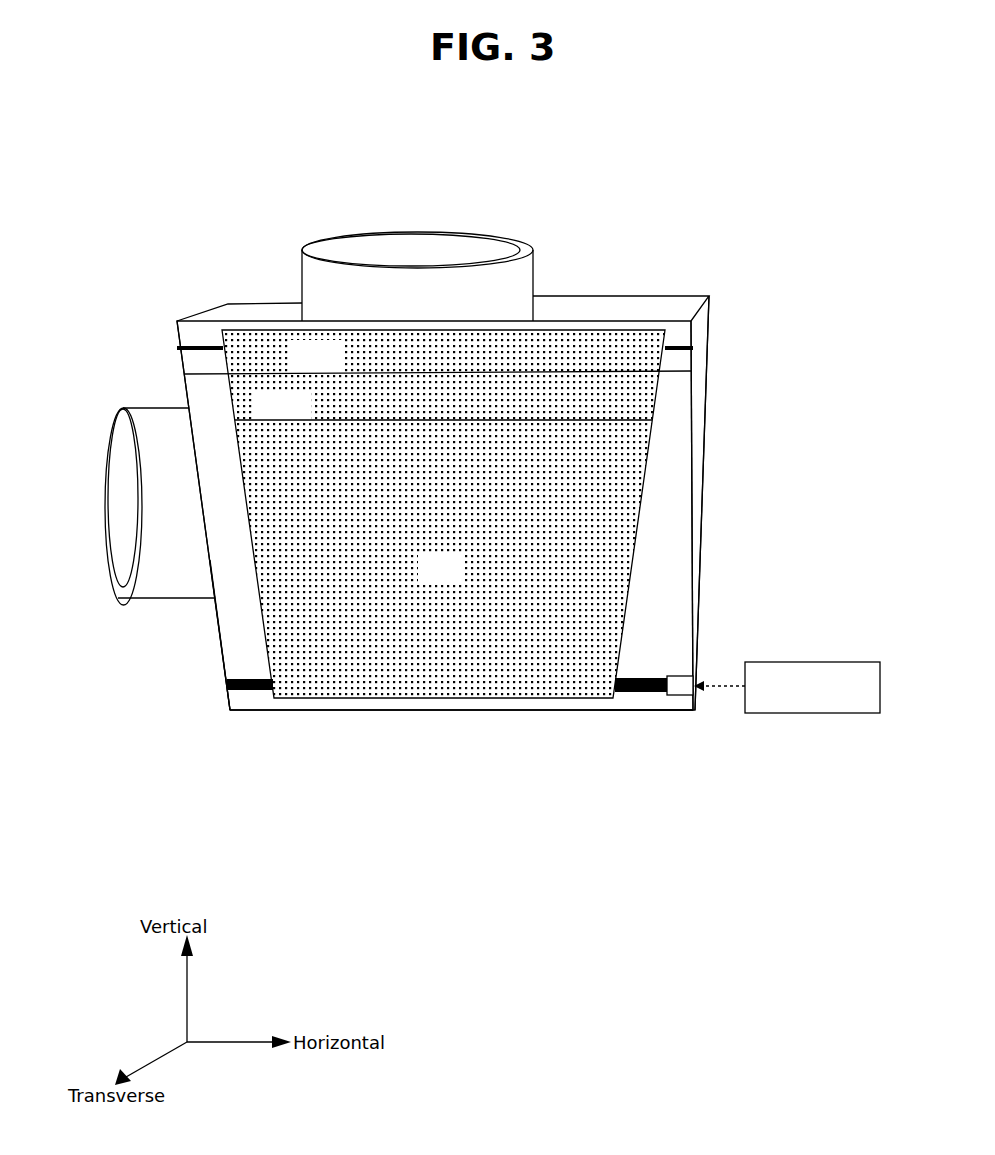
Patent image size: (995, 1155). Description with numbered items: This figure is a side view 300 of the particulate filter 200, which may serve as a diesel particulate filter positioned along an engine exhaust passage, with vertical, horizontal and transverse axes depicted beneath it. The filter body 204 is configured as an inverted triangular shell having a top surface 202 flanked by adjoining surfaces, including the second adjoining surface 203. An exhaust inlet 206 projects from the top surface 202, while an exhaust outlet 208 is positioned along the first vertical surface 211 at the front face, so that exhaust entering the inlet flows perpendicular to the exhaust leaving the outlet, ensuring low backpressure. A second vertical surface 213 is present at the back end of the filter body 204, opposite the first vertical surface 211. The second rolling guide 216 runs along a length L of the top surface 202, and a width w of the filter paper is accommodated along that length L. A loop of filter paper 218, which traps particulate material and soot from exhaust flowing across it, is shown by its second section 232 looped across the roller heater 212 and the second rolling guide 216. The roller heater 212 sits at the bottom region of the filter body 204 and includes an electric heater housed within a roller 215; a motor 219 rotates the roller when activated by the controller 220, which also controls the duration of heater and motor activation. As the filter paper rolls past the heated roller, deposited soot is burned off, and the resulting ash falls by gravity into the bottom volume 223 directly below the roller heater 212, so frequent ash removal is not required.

The side view 300 is at (150, 88).
The particulate filter 200 is at (188, 151).
The top surface 202 is at (620, 298).
The second adjoining surface 203 is at (515, 712).
The filter body 204 is at (106, 365).
The exhaust inlet 206 is at (370, 250).
The exhaust outlet 208 is at (125, 535).
The first vertical surface 211 is at (213, 641).
The roller heater 212 is at (648, 708).
The second vertical surface 213 is at (699, 430).
The roller 215 is at (638, 680).
The second rolling guide 216 is at (677, 347).
The loop of filter paper 218 is at (635, 503).
The motor 219 is at (683, 680).
The controller 220 is at (832, 698).
The bottom volume 223 is at (258, 707).
The second section 232 is at (460, 582).
The length L is at (337, 375).
The width w is at (307, 422).